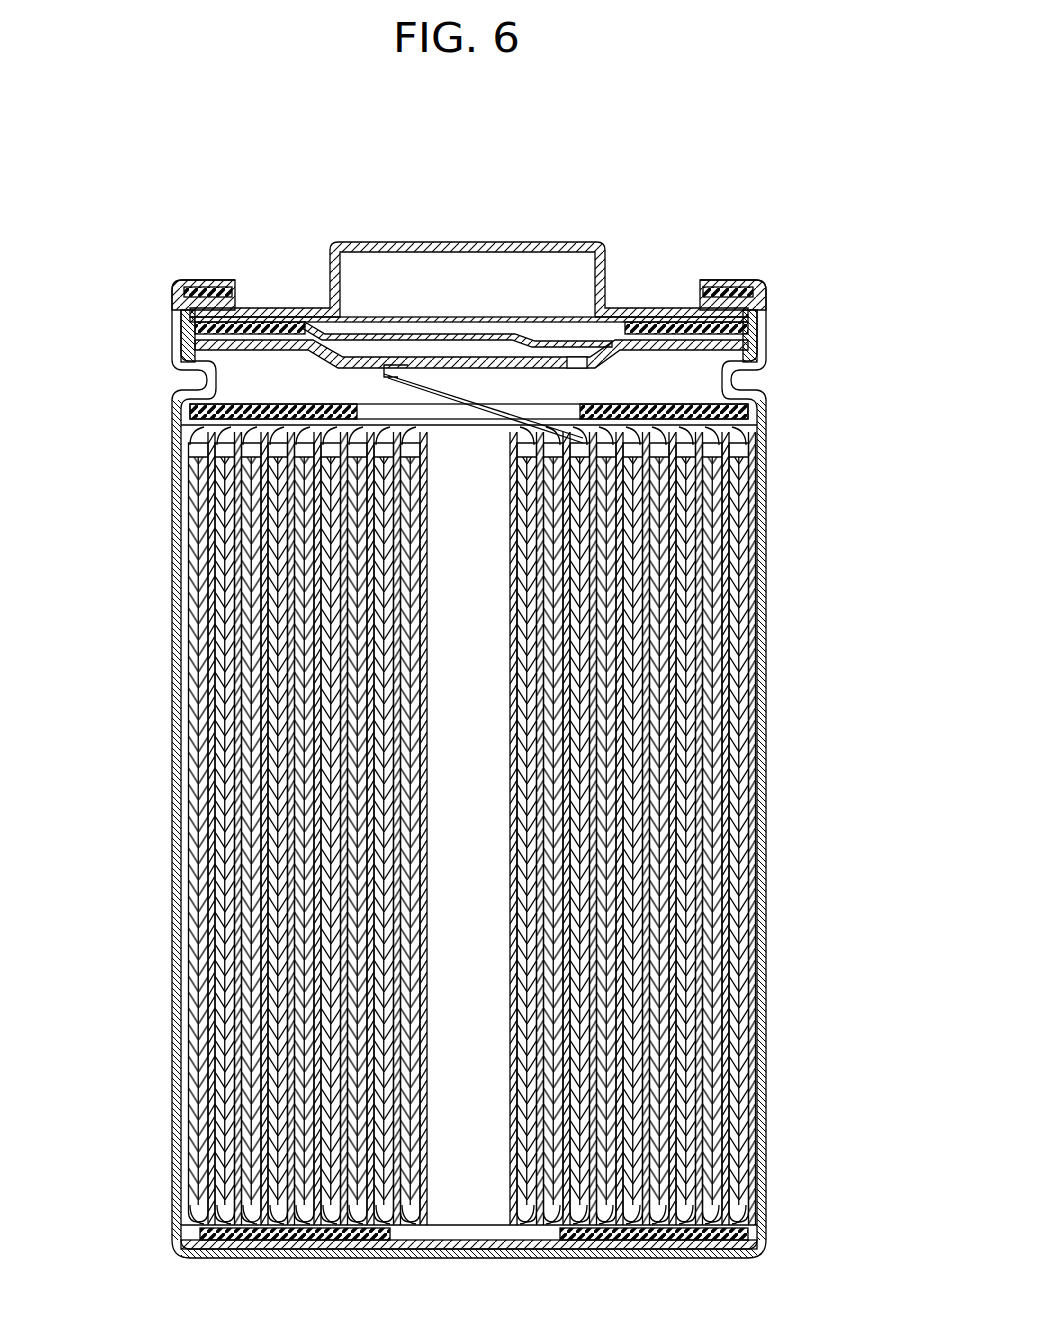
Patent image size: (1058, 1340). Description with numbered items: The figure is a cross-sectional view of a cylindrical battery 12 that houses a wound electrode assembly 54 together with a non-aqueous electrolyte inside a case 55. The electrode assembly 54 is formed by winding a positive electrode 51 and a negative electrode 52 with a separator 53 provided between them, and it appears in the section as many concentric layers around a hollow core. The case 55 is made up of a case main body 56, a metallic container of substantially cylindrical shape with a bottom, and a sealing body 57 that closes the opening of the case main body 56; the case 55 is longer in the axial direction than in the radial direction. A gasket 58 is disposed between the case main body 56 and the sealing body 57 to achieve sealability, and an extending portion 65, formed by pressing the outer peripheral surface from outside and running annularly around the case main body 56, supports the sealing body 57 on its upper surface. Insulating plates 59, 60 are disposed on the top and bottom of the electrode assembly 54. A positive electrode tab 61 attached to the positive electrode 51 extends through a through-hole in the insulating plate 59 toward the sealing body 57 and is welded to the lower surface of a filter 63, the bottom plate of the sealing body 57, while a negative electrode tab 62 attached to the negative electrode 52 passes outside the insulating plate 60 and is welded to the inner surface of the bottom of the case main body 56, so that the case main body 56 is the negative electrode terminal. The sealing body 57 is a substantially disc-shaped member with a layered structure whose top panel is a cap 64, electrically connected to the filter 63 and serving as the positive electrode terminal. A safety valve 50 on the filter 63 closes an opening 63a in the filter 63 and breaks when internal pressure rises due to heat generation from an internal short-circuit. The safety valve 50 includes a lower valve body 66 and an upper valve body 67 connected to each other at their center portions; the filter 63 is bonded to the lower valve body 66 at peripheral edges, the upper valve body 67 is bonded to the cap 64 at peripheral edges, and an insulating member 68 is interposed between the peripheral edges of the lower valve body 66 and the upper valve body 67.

The cylindrical battery 12 is at (787, 108).
The safety valve 50 is at (430, 139).
The positive electrode 51 is at (738, 897).
The negative electrode 52 is at (752, 932).
The separator 53 is at (724, 967).
The wound electrode assembly 54 is at (878, 883).
The case 55 is at (768, 178).
The case main body 56 is at (741, 280).
The sealing body 57 is at (688, 305).
The gasket 58 is at (768, 316).
The insulating plate 59 is at (752, 422).
The insulating plate 60 is at (760, 1243).
The positive electrode tab 61 is at (382, 374).
The negative electrode tab 62 is at (205, 1232).
The filter 63 is at (482, 358).
The opening 63a is at (575, 360).
The cap 64 is at (558, 242).
The extending portion 65 is at (190, 406).
The lower valve body 66 is at (352, 326).
The upper valve body 67 is at (400, 343).
The insulating member 68 is at (245, 306).